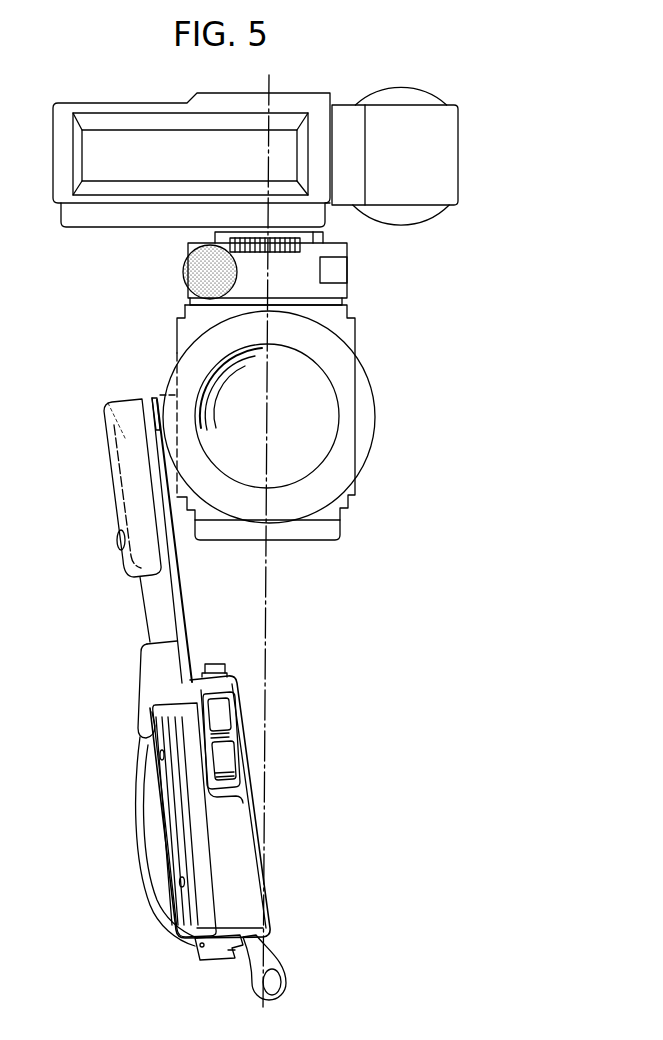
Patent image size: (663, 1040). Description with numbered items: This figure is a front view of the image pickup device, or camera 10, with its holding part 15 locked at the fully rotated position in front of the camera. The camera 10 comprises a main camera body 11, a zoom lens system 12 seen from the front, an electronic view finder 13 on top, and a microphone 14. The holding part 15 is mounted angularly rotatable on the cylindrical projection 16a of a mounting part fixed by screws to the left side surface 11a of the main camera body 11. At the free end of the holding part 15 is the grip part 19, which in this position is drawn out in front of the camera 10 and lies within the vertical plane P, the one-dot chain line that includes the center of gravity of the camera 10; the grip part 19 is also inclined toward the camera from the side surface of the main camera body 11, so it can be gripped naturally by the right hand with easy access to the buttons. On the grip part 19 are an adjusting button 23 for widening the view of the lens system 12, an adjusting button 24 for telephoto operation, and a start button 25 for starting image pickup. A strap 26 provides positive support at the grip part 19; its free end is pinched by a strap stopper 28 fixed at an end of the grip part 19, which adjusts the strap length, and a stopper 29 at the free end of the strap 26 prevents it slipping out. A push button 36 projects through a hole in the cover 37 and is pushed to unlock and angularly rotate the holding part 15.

The image pickup device 10 is at (103, 80).
The main camera body 11 is at (357, 333).
The left side surface 11a is at (177, 340).
The zoom lens system 12 is at (376, 406).
The electronic view finder 13 is at (155, 102).
The microphone 14 is at (184, 269).
The holding part 15 is at (140, 599).
The cylindrical projection 16a is at (160, 398).
The grip part 19 is at (232, 832).
The adjusting button 23 is at (226, 712).
The adjusting button 24 is at (233, 754).
The start button 25 is at (212, 661).
The strap 26 is at (137, 851).
The strap stopper 28 is at (216, 947).
The stopper 29 is at (284, 975).
The push button 36 is at (117, 541).
The cover 37 is at (105, 456).
The vertical plane p is at (268, 598).